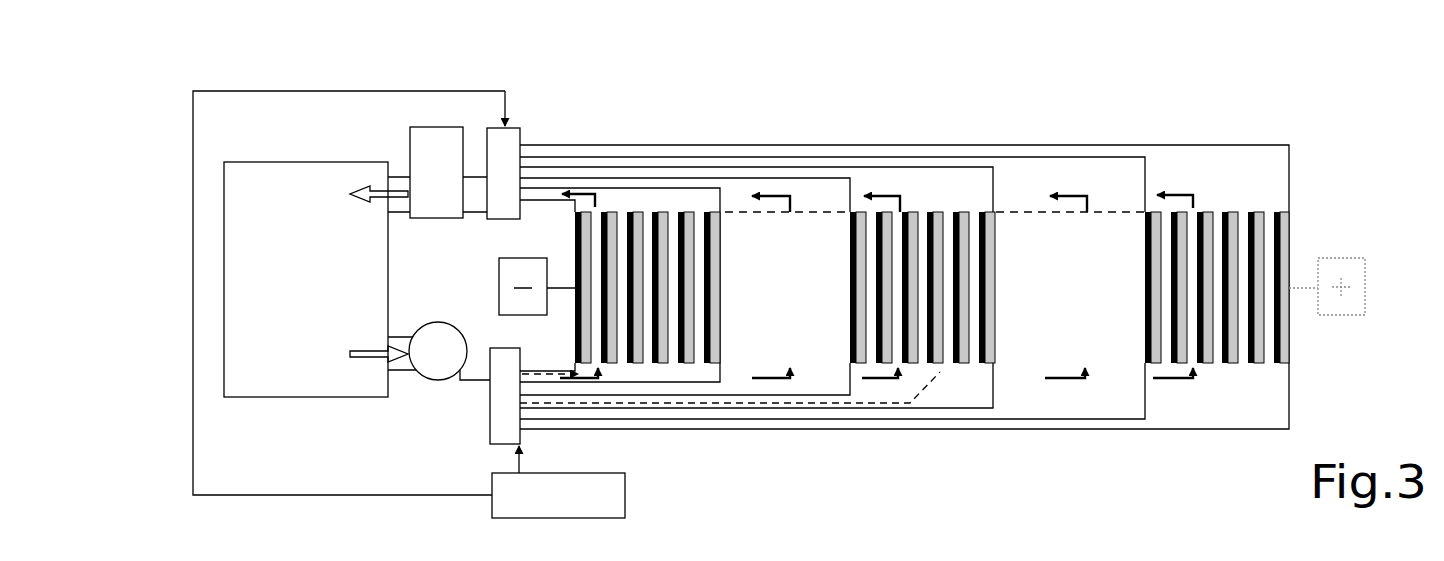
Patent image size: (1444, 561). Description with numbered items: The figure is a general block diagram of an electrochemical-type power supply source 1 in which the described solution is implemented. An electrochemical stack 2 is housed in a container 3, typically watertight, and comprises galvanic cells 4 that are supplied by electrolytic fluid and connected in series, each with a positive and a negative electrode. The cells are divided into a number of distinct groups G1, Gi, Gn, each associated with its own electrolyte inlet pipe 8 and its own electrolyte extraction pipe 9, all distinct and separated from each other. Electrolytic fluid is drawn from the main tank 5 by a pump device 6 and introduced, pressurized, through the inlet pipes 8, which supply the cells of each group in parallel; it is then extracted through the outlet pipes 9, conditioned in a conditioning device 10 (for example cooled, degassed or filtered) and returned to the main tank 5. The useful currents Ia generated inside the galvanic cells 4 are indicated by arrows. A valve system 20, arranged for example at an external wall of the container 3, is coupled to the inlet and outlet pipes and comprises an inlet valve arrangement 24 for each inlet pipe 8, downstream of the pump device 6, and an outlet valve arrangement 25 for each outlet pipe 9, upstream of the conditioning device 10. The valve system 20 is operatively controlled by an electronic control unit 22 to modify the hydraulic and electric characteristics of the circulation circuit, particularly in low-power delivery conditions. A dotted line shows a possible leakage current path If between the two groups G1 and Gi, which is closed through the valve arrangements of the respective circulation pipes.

The electrochemical-type power supply source 1 is at (1348, 125).
The electrochemical stack 2 is at (915, 130).
The container 3 is at (1030, 144).
The galvanic cells 4 is at (713, 365).
The main tank 5 is at (284, 172).
The pump device 6 is at (443, 372).
The electrolyte inlet pipe 8 is at (532, 370).
The electrolyte extraction pipe 9 is at (537, 196).
The conditioning device 10 is at (413, 136).
The valve system 20 is at (514, 118).
The electronic control unit 22 is at (587, 520).
The inlet valve arrangement 24 is at (488, 426).
The outlet valve arrangement 25 is at (523, 130).
The first group of galvanic cells G1 is at (645, 370).
The i-th group of galvanic cells Gi is at (910, 374).
The n-th group of galvanic cells Gn is at (1220, 374).
The useful currents Ia is at (1216, 134).
The leakage current path If is at (736, 404).